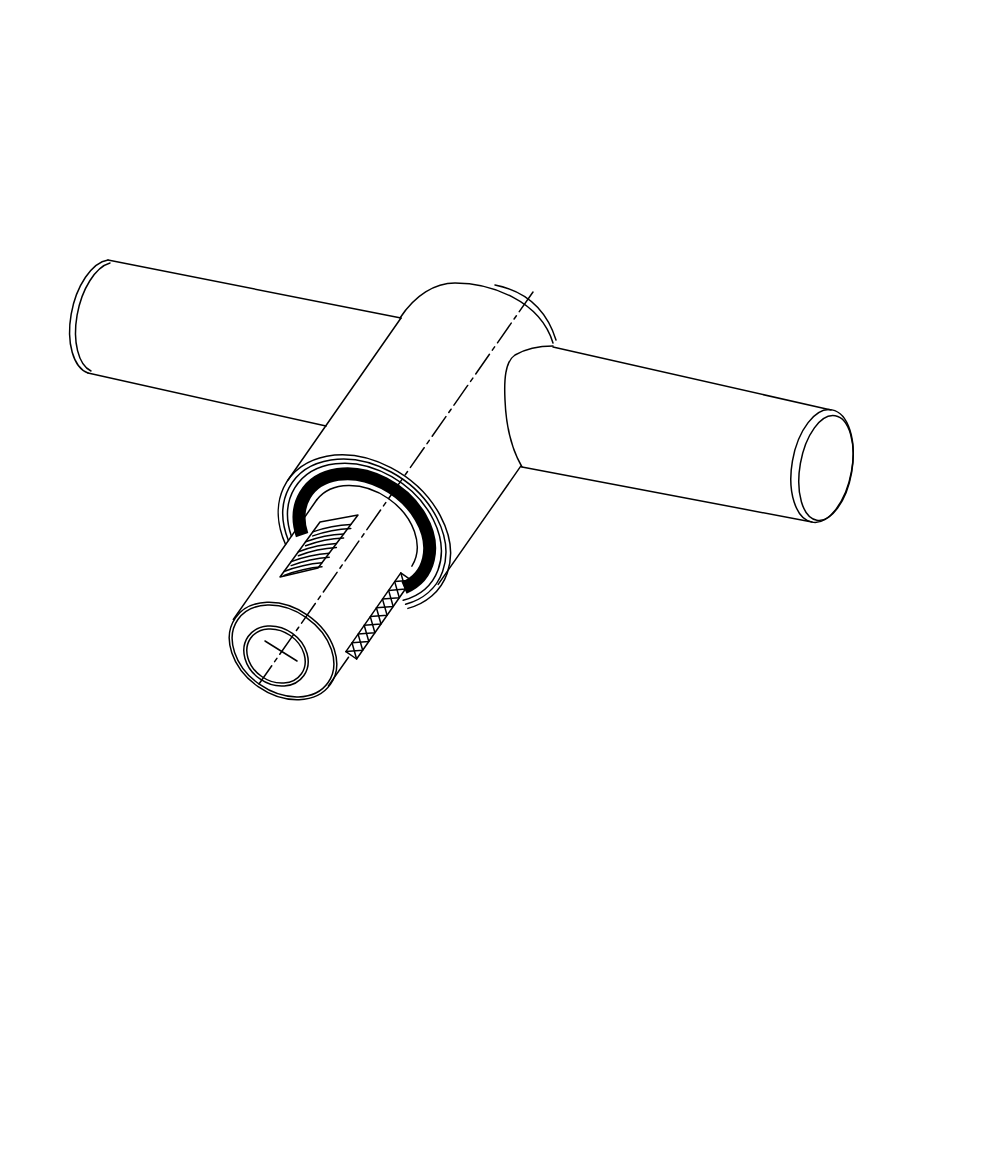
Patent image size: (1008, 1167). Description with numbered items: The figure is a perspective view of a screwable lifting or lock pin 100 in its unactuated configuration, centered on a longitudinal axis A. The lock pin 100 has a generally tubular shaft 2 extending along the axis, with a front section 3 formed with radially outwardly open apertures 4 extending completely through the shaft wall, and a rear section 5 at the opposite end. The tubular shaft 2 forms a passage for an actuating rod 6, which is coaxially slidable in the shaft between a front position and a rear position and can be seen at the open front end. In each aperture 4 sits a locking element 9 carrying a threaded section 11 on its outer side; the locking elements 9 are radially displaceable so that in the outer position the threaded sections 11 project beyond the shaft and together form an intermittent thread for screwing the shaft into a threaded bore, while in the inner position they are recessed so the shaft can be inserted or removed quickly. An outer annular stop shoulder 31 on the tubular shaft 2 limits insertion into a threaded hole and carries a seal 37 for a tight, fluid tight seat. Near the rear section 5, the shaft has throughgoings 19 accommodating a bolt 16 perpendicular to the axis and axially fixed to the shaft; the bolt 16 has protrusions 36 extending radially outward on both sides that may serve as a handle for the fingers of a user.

The lock pin 100 is at (298, 110).
The tubular shaft 2 is at (377, 514).
The front section 3 is at (260, 705).
The aperture 4 is at (270, 571).
The rear section 5 is at (377, 480).
The actuating rod 6 is at (272, 650).
The locking element 9 is at (320, 589).
The threaded section 11 is at (387, 624).
The bolt 16 is at (466, 363).
The throughgoings 19 is at (522, 363).
The outer annular stop shoulder 31 is at (440, 562).
The protrusions 36 is at (220, 327).
The seal 37 is at (418, 567).